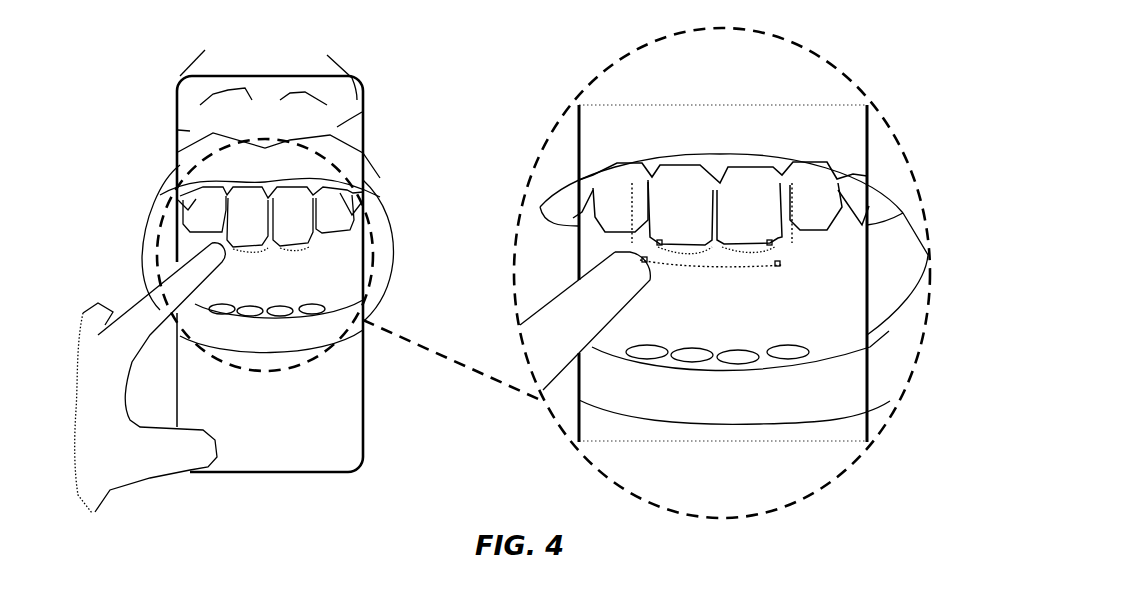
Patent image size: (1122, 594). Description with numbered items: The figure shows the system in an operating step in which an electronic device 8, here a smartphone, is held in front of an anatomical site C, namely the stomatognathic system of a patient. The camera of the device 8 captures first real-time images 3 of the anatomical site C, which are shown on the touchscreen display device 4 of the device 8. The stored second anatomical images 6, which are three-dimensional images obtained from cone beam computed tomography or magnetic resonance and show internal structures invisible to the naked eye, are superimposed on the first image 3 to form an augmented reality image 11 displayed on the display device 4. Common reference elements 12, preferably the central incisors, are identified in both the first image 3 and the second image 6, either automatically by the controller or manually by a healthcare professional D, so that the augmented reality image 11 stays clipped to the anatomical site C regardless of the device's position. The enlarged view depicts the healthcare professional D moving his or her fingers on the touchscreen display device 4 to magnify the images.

The first real-time images 3 is at (178, 228).
The display device 4 is at (348, 428).
The second anatomical images 6 is at (309, 247).
The electronic device 8 is at (365, 105).
The augmented reality image 11 is at (713, 387).
The common reference elements 12 is at (632, 243).
The anatomical site C is at (160, 176).
The healthcare professional D is at (108, 468).